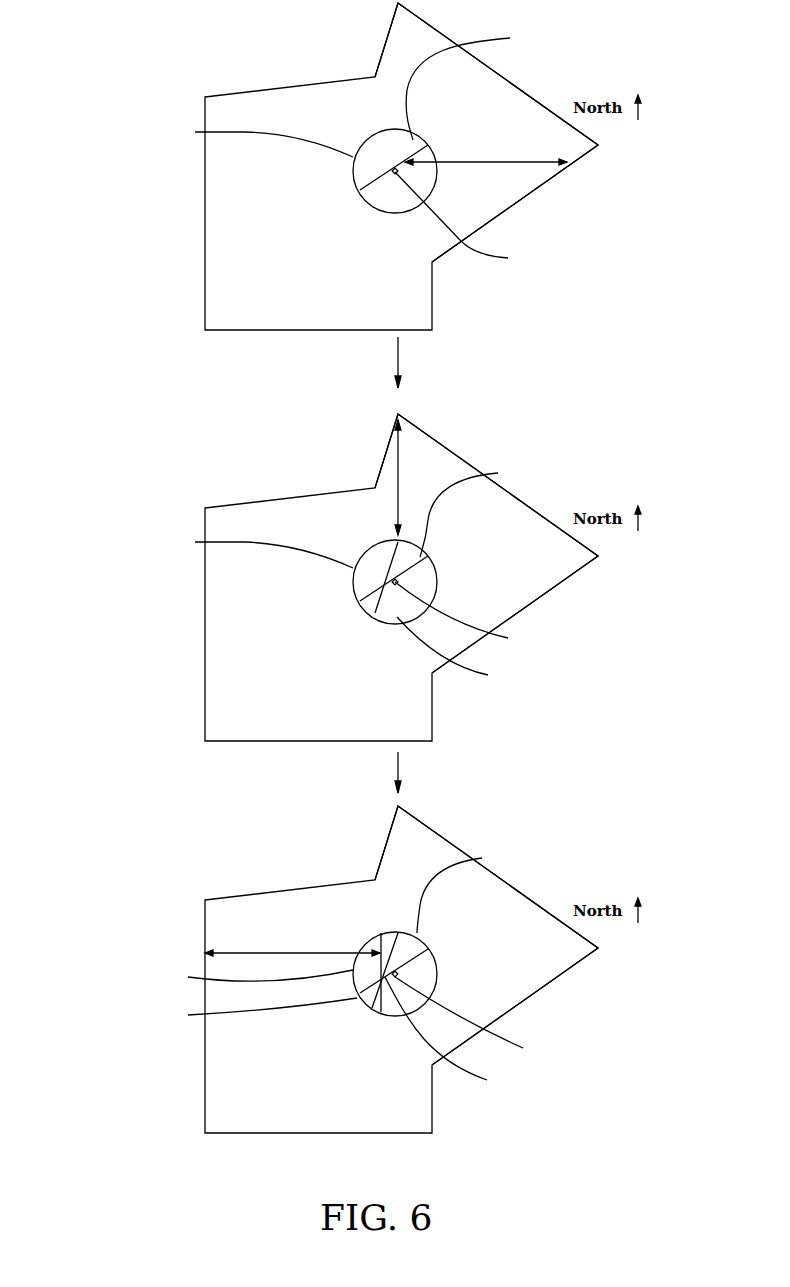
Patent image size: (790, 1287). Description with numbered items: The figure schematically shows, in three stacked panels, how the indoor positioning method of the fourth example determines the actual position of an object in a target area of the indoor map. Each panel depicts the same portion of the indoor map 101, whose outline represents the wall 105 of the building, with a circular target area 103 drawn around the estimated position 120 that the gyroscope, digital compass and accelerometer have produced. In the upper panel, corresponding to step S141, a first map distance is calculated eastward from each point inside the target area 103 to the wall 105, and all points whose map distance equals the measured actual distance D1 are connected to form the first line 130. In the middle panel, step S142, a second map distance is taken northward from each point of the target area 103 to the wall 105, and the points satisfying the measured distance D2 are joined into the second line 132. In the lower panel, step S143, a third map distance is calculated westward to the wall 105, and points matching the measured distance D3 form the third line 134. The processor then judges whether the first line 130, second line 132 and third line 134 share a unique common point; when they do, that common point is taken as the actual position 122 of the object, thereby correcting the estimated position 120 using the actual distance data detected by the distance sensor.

The indoor map 101 is at (302, 93).
The target area 103 is at (247, 557).
The wall 105 is at (388, 38).
The estimated position 120 is at (487, 617).
The actual position 122 is at (462, 1037).
The first line 130 is at (480, 480).
The second line 132 is at (339, 824).
The third line 134 is at (383, 973).
The step of obtaining the first line S141 is at (177, 213).
The step of obtaining the second line S142 is at (177, 624).
The step of obtaining the third line S143 is at (183, 928).
The actual distance data along the first direction D1 is at (486, 151).
The actual distance data along the second direction D2 is at (414, 477).
The actual distance data along the third direction D3 is at (292, 943).